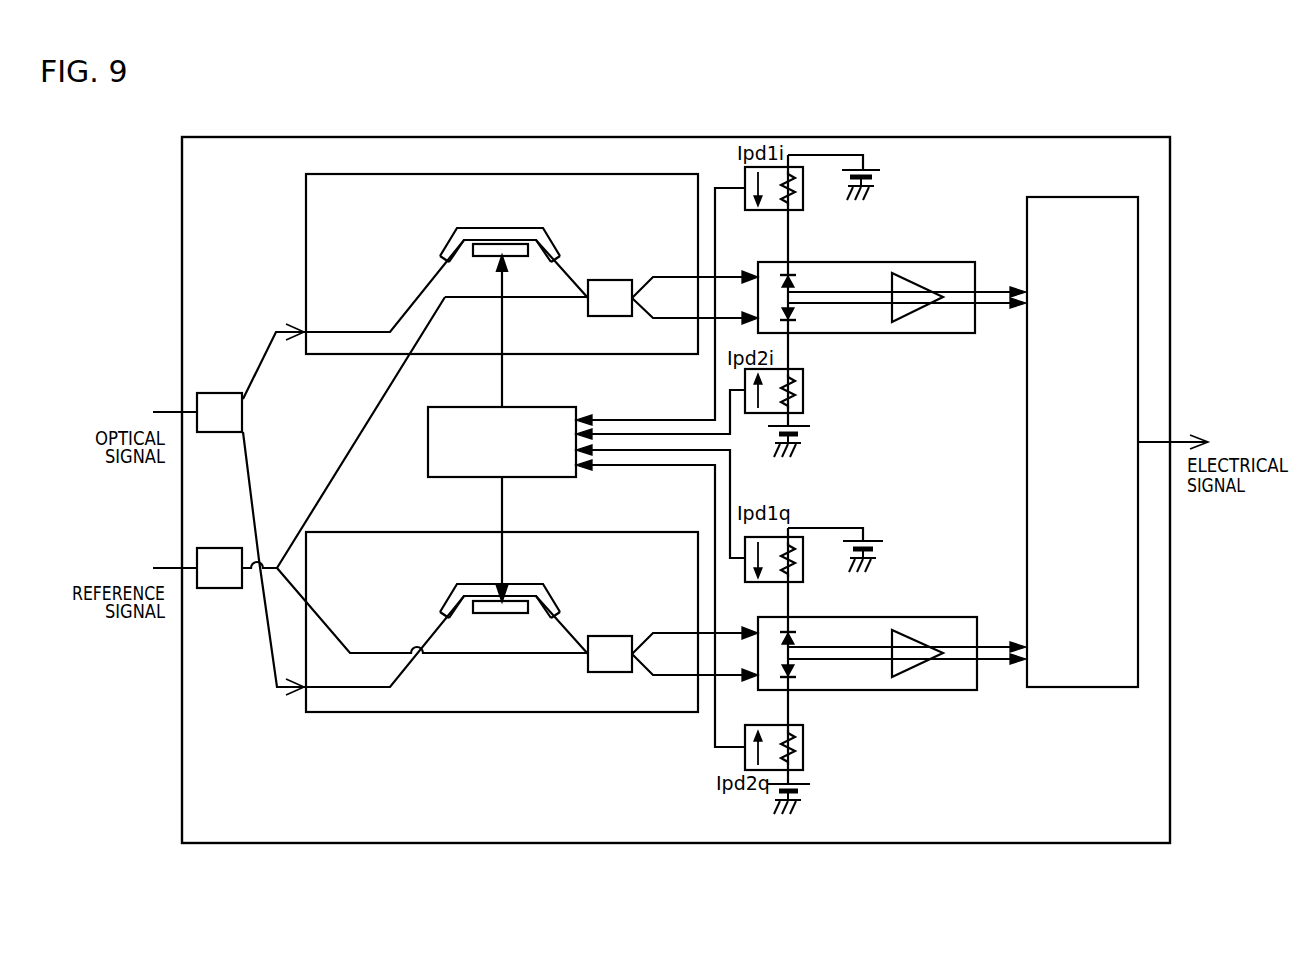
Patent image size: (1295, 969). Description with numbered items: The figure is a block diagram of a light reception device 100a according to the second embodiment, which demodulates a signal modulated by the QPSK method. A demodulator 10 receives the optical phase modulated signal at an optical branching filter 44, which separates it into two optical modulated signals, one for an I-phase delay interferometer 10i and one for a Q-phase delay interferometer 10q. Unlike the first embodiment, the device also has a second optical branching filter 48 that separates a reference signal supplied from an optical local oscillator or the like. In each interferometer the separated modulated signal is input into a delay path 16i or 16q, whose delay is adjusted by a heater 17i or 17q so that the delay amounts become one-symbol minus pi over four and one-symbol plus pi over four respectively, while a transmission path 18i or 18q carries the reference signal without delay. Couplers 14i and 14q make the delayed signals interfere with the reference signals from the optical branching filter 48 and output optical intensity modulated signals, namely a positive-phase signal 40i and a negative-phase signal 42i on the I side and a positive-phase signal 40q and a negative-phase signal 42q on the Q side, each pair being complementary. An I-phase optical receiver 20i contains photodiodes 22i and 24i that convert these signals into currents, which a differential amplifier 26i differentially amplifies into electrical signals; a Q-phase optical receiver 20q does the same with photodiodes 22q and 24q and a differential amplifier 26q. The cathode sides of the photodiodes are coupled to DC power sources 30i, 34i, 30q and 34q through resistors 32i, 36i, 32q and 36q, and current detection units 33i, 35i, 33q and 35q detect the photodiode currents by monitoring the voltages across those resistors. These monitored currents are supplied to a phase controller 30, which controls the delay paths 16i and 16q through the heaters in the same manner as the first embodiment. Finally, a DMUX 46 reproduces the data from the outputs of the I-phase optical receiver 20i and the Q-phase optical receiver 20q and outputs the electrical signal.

The light reception device 100a is at (1090, 137).
The demodulator 10 is at (607, 157).
The I-phase delay interferometer 10i is at (650, 174).
The Q-phase delay interferometer 10q is at (632, 532).
The coupler 14i is at (605, 280).
The coupler 14q is at (605, 673).
The delay path 16i is at (516, 228).
The delay path 16q is at (553, 590).
The heater 17i is at (485, 259).
The heater 17q is at (520, 615).
The transmission path 18i is at (528, 299).
The transmission path 18q is at (508, 656).
The I-phase optical receiver 20i is at (976, 262).
The Q-phase optical receiver 20q is at (980, 617).
The photodiode 22i is at (796, 275).
The photodiode 22q is at (796, 632).
The photodiode 24i is at (796, 318).
The photodiode 24q is at (796, 675).
The differential amplifier 26i is at (916, 310).
The differential amplifier 26q is at (920, 665).
The phase controller 30 is at (428, 456).
The DC power source 30i is at (877, 165).
The DC power source 30q is at (876, 553).
The resistor 32i is at (778, 203).
The resistor 32q is at (782, 565).
The current detection unit 33i is at (795, 207).
The current detection unit 33q is at (802, 562).
The DC power source 34i is at (800, 446).
The DC power source 34q is at (803, 793).
The current detection unit 35i is at (803, 375).
The current detection unit 35q is at (803, 730).
The resistor 36i is at (794, 394).
The resistor 36q is at (795, 748).
The positive-phase signal 40i is at (687, 277).
The positive-phase signal 40q is at (683, 633).
The negative-phase signal 42i is at (687, 320).
The negative-phase signal 42q is at (680, 677).
The optical branching filter 44 is at (222, 392).
The DMUX 46 is at (1082, 688).
The optical branching filter 48 is at (220, 589).